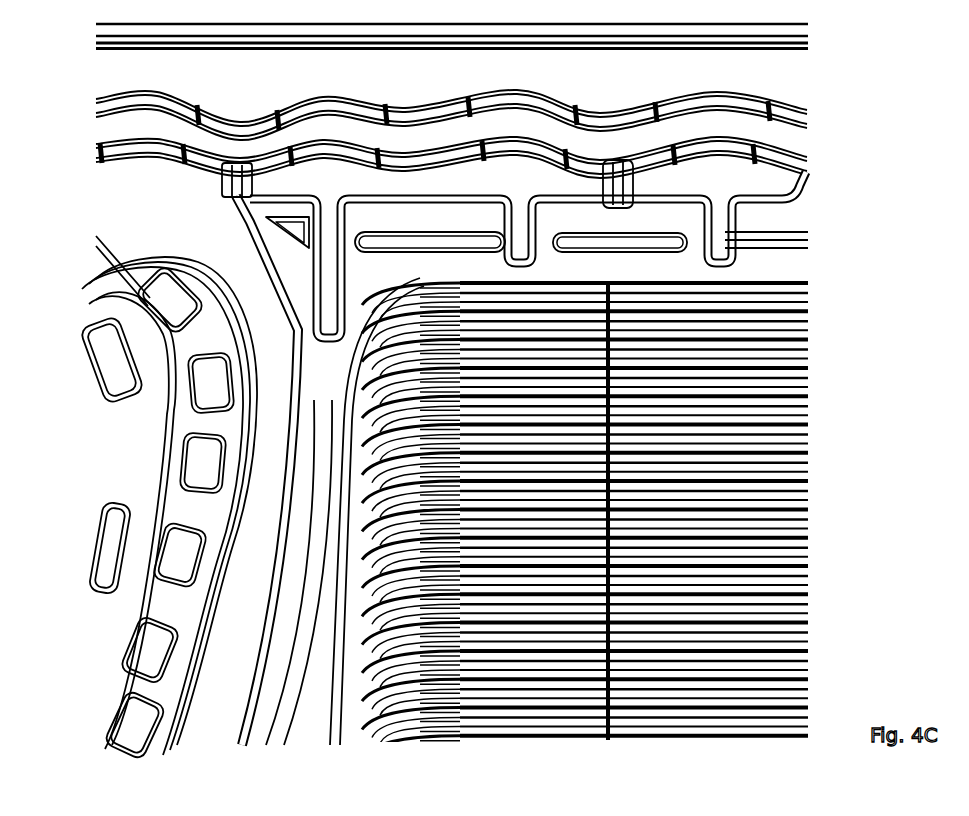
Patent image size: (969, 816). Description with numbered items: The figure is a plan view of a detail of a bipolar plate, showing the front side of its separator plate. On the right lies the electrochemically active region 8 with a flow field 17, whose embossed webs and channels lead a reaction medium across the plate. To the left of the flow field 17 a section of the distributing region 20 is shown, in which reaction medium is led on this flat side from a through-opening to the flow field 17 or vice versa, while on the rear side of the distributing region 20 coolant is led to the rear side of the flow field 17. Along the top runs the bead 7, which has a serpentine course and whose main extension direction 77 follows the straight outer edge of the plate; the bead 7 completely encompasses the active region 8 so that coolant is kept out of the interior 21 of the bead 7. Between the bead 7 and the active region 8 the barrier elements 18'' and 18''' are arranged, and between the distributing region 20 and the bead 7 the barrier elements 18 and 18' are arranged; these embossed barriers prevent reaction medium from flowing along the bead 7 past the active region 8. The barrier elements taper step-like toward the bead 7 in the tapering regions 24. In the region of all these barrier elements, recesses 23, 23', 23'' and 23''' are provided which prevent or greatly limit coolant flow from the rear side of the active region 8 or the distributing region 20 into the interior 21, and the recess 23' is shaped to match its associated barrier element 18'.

The bead 7 is at (158, 120).
The electrochemically active region 8 is at (462, 742).
The flow field 17 is at (562, 622).
The barrier element 18 is at (385, 198).
The barrier element 18' is at (277, 402).
The barrier element 18'' is at (632, 166).
The barrier element 18''' is at (807, 197).
The distributing region 20 is at (222, 741).
The interior of the bead 21 is at (92, 133).
The recess 23 is at (430, 255).
The recess 23' is at (291, 249).
The recess 23'' is at (620, 229).
The recess 23''' is at (798, 255).
The tapering region 24 is at (648, 186).
The main extension direction of the bead 77 is at (750, 66).